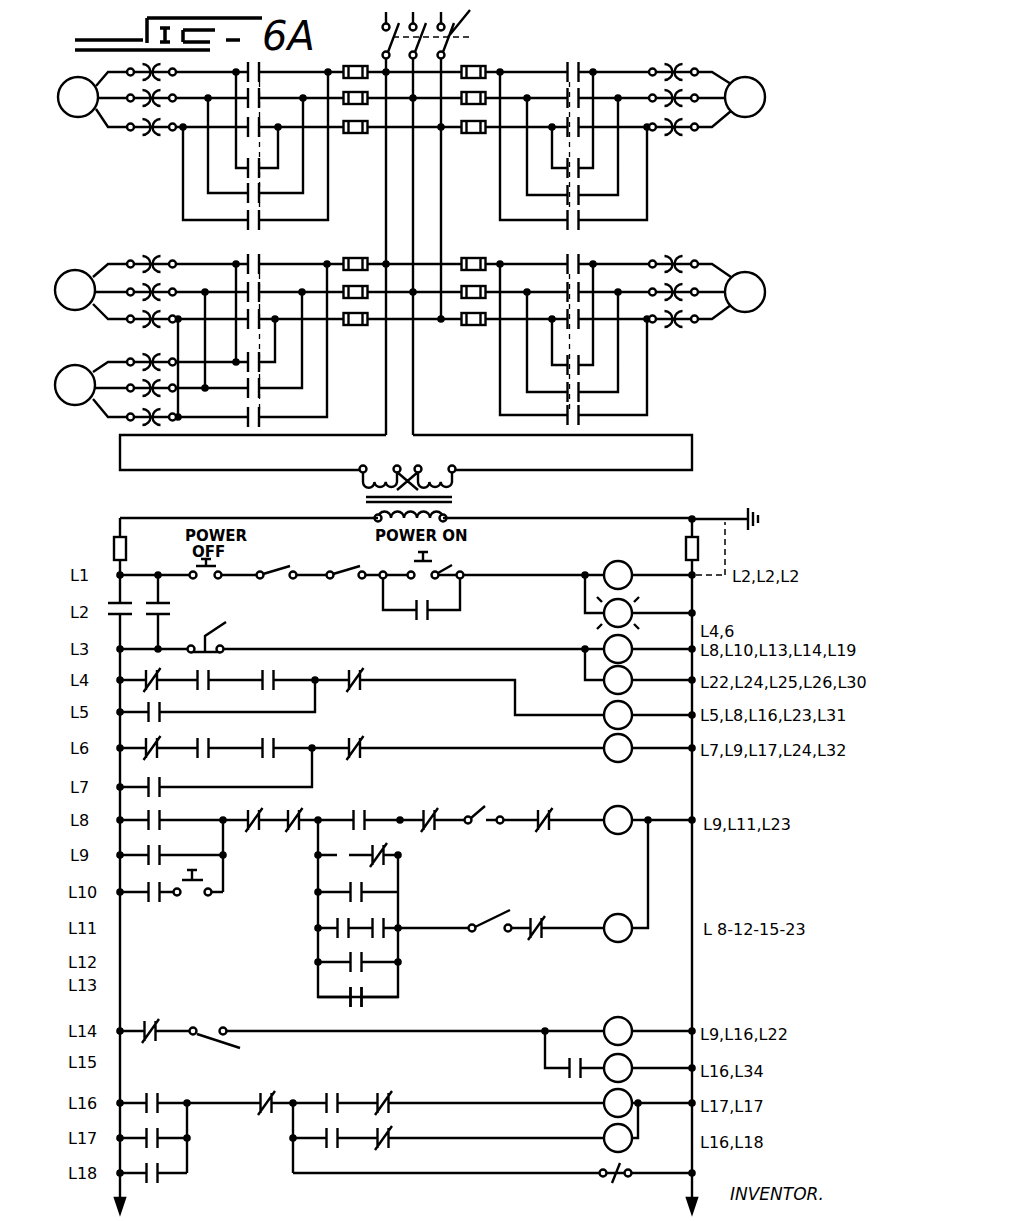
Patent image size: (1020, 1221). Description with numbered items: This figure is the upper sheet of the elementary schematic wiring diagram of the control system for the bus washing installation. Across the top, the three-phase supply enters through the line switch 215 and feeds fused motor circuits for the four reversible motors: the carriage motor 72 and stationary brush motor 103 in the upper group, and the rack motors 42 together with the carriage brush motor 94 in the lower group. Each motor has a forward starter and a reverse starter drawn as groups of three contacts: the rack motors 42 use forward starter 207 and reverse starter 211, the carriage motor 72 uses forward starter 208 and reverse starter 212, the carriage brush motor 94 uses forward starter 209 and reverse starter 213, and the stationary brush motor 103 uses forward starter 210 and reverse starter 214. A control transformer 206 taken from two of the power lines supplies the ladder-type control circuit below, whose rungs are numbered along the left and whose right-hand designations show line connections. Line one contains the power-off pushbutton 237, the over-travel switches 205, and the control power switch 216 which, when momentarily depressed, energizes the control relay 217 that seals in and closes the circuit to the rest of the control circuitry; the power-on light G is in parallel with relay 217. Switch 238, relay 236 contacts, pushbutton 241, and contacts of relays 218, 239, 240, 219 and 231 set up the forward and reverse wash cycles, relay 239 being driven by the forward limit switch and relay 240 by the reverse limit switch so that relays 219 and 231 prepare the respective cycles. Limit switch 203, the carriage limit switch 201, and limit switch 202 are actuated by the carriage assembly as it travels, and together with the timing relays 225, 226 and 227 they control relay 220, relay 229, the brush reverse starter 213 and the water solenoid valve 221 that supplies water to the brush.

The carriage motor 72 is at (74, 90).
The stationary brush motor 103 is at (765, 93).
The rack motors 42 is at (73, 283).
The carriage brush motor 94 is at (765, 290).
The carriage reverse motor starter 212 is at (261, 74).
The carriage motor starter 208 is at (259, 174).
The stationary brush reverse motor starter 214 is at (568, 64).
The stationary brush motor starter 210 is at (580, 168).
The line switch 215 is at (472, 22).
The rack reverse motor starter 211 is at (261, 266).
The rack motor starter 207 is at (257, 370).
The carriage brush reverse motor starter 213 is at (566, 262).
The carriage brush motor starter 209 is at (578, 372).
The control transformer 206 is at (460, 500).
The power off switch 237 is at (188, 571).
The over-travel switches 205 is at (281, 572).
The control power switch 216 is at (448, 570).
The control relay 217 is at (620, 573).
The relay 236 is at (160, 1018).
The selector switch 238 is at (226, 633).
The control relay 218 is at (209, 670).
The control relay 239 is at (274, 670).
The control relay coil 240 is at (360, 670).
The control relay 219 is at (630, 705).
The control relay coil 231 is at (606, 742).
The pushbutton 241 is at (195, 893).
The limit switch 203 is at (478, 808).
The control relay 220 is at (382, 868).
The time delay relay 225 is at (362, 900).
The timing relay 226 is at (384, 932).
The carriage limit switch 201 is at (489, 919).
The time delay relay 227 is at (318, 962).
The limit switch 202 is at (207, 1027).
The control relay 229 is at (613, 1070).
The water solenoid valve 221 is at (608, 1180).